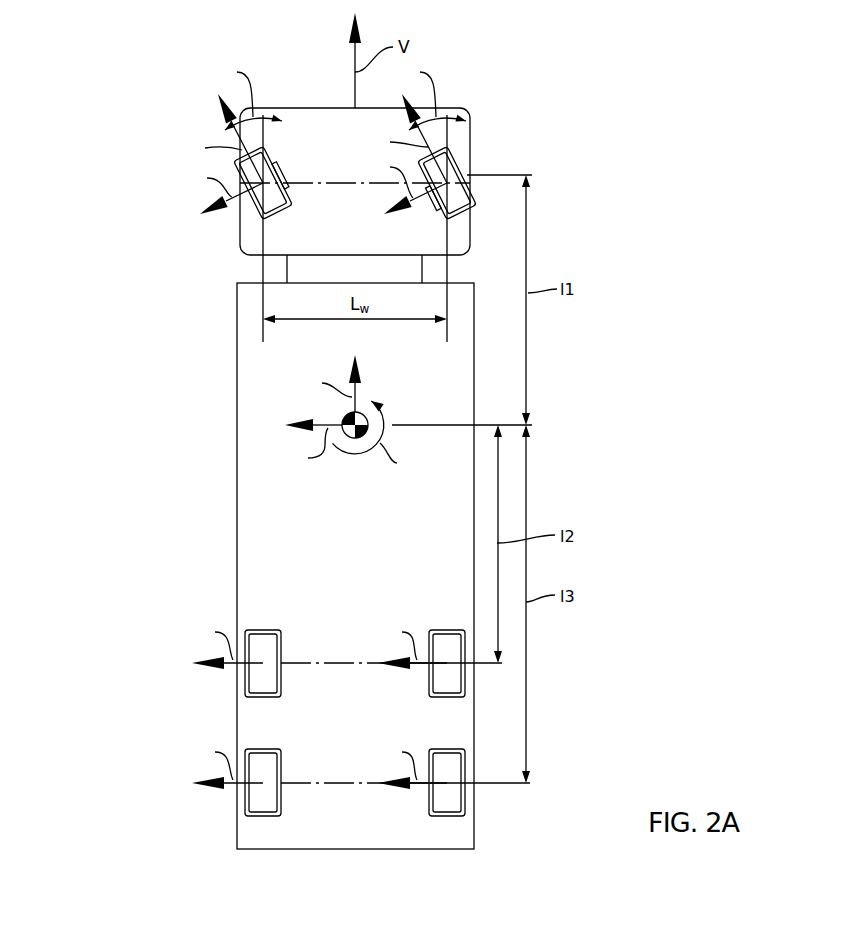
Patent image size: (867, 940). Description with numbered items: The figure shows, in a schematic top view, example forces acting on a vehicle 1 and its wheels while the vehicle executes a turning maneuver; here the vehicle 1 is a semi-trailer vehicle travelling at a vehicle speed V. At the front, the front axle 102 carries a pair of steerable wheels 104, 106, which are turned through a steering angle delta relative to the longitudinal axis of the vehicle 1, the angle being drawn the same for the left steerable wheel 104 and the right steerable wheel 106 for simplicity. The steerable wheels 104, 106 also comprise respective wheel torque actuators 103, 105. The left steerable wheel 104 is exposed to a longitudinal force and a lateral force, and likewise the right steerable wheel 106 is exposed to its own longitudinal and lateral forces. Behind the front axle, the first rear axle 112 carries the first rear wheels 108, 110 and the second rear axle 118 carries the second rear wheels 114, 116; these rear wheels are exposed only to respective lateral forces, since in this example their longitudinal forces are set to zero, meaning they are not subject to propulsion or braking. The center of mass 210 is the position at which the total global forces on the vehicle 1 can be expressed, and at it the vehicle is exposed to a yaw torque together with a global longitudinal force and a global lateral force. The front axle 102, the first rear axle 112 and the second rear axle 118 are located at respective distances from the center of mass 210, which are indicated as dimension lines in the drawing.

The vehicle 1 is at (265, 546).
The front axle 102 is at (373, 187).
The wheel torque actuator 103 is at (283, 172).
The steerable wheel 104 is at (250, 208).
The wheel torque actuator 105 is at (425, 200).
The steerable wheel 106 is at (458, 163).
The first rear wheel 108 is at (242, 678).
The first rear wheel 110 is at (467, 678).
The first rear axle 112 is at (356, 665).
The second rear wheel 114 is at (242, 798).
The second rear wheel 116 is at (467, 797).
The second rear axle 118 is at (356, 785).
The center of mass 210 is at (334, 416).